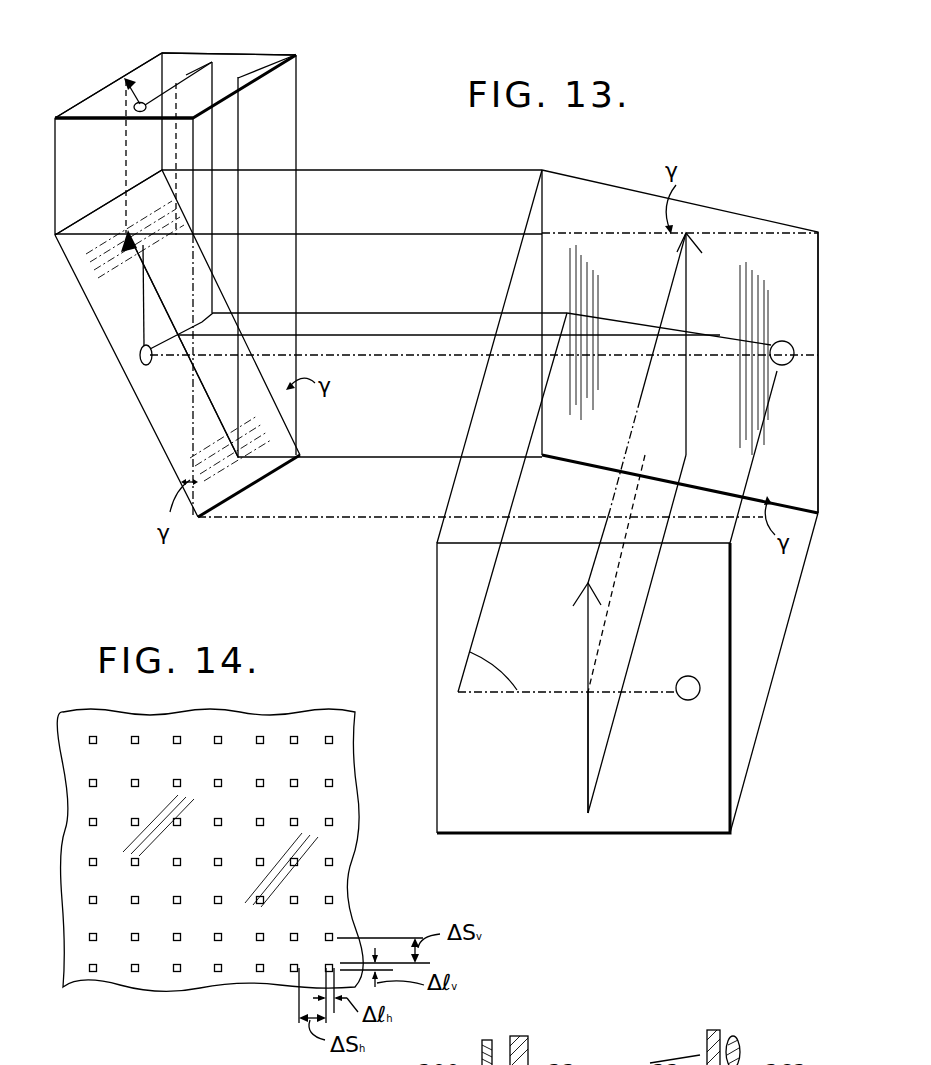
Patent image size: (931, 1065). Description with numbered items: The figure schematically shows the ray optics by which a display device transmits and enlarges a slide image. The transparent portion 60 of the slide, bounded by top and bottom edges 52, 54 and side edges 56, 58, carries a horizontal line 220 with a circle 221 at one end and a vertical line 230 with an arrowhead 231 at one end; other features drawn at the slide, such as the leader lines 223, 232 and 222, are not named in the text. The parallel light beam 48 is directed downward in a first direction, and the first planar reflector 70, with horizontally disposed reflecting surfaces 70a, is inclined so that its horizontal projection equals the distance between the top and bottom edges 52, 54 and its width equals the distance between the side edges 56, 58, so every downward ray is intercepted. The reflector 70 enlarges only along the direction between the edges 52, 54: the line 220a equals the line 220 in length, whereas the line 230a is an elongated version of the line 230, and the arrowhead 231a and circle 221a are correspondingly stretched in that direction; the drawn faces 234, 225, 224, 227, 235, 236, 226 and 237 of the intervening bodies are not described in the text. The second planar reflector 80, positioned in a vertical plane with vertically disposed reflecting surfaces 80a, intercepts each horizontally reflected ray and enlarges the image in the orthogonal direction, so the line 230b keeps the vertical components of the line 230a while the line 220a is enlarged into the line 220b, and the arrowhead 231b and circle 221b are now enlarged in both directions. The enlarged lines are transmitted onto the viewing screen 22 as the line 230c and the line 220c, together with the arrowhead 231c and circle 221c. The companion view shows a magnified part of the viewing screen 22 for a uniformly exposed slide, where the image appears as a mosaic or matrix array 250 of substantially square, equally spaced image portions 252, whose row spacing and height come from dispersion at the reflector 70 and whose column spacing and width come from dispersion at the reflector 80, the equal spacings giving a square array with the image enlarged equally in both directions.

In FIG. 13, the parallel light beam 48 is at (284, 11).
In FIG. 13, the transparent portion 60 is at (116, 60).
In FIG. 13, the side edge 56 is at (185, 53).
In FIG. 13, the side edge 58 is at (100, 118).
In FIG. 13, the top edge 52 is at (125, 76).
In FIG. 13, the bottom edge 54 is at (282, 67).
In FIG. 13, the horizontal line 220 is at (193, 68).
In FIG. 13, the incident beam 223 is at (213, 72).
In FIG. 13, the vertical line 230 is at (226, 81).
In FIG. 13, the arrowhead 231 is at (122, 82).
In FIG. 13, the circle 221 is at (138, 110).
In FIG. 13, the plate edge 232 is at (125, 161).
In FIG. 13, the reflected beam 222 is at (125, 186).
In FIG. 13, the first planar reflector 70 is at (144, 446).
In FIG. 13, the reflecting surfaces 70a is at (120, 247).
In FIG. 13, the arrowhead at first stage 231a is at (118, 243).
In FIG. 13, the circle at first stage 221a is at (140, 358).
In FIG. 13, the line 230a is at (212, 407).
In FIG. 13, the line 220a is at (203, 322).
In FIG. 13, the upper prism block 234 is at (452, 236).
In FIG. 13, the middle prism block 225 is at (445, 318).
In FIG. 13, the lower prism block 224 is at (426, 357).
In FIG. 13, the front face of block 227 is at (540, 420).
In FIG. 13, the bottom edge of block 235 is at (402, 460).
In FIG. 13, the second planar reflector 80 is at (844, 479).
In FIG. 13, the reflecting surfaces 80a is at (585, 257).
In FIG. 13, the inner face 236 is at (632, 415).
In FIG. 13, the arrowhead at second stage 231b is at (690, 250).
In FIG. 13, the line 230b is at (690, 287).
In FIG. 13, the line 220b is at (717, 336).
In FIG. 13, the circle at second stage 221b is at (794, 353).
In FIG. 13, the rear face of block 226 is at (763, 430).
In FIG. 13, the side face 237 is at (686, 476).
In FIG. 13, the viewing screen 22 is at (686, 849).
In FIG. 14, the viewing screen 22 is at (233, 725).
In FIG. 13, the arrowhead on screen 231c is at (582, 593).
In FIG. 13, the line 220c is at (465, 647).
In FIG. 13, the circle on screen 221c is at (700, 682).
In FIG. 13, the line 230c is at (587, 763).
In FIG. 14, the mosaic or matrix array 250 is at (309, 722).
In FIG. 14, the image portions 252 is at (337, 782).